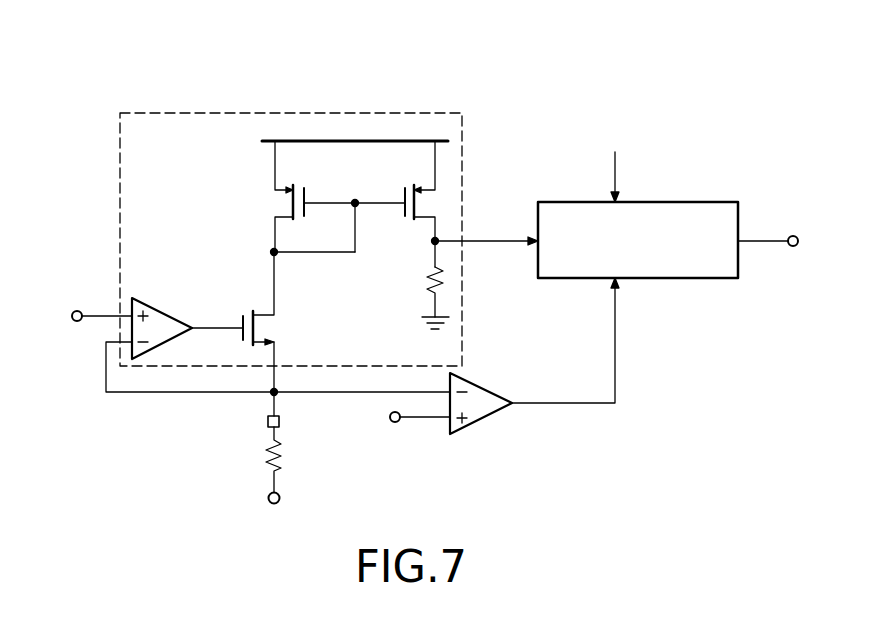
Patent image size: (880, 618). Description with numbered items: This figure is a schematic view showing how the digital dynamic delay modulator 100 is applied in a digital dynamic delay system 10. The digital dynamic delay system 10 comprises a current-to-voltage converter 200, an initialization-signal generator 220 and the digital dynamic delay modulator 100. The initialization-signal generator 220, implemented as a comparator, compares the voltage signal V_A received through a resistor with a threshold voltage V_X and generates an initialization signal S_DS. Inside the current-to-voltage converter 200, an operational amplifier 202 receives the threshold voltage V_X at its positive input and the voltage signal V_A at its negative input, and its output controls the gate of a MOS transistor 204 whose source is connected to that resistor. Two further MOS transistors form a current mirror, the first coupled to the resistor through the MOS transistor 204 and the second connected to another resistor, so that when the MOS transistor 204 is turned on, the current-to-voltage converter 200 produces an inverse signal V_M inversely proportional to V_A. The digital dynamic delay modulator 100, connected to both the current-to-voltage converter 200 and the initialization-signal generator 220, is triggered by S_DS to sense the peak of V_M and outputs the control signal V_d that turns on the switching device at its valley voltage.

The digital dynamic delay system 10 is at (423, 63).
The digital dynamic delay modulator 100 is at (641, 202).
The current-to-voltage converter 200 is at (294, 113).
The operational amplifier 202 is at (166, 311).
The MOS transistor 204 is at (272, 327).
The initialization-signal generator 220 is at (480, 420).